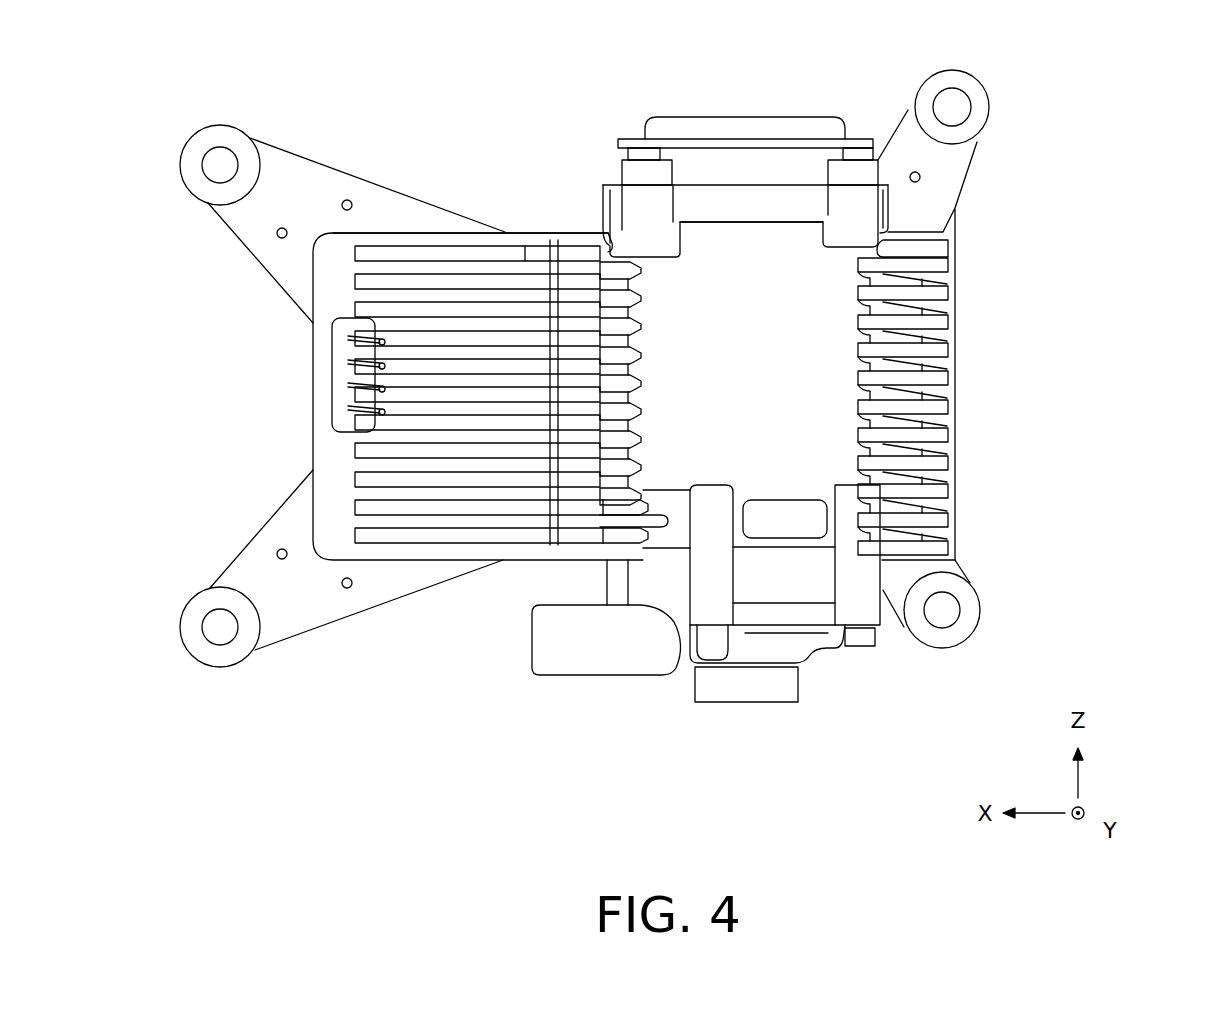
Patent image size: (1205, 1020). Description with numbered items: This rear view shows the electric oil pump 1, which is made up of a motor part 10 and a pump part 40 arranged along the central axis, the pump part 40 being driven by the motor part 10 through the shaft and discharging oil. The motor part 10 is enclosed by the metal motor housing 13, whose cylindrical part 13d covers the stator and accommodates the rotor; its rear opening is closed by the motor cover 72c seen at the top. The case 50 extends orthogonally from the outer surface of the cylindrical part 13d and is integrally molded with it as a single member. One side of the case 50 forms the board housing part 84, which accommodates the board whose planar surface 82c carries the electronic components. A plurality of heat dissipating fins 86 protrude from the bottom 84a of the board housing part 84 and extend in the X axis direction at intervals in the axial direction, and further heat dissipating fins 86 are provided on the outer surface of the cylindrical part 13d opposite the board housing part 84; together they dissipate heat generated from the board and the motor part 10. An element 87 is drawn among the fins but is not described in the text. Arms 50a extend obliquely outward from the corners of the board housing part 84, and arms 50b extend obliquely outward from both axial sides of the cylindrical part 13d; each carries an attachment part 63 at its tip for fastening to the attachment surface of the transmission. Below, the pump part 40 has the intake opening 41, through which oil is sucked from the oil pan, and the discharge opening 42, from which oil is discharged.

The electric oil pump 1 is at (1122, 128).
The motor part 10 is at (745, 137).
The motor housing 13 is at (695, 305).
The cylindrical part 13d is at (710, 275).
The pump part 40 is at (665, 637).
The intake opening 41 is at (532, 653).
The discharge opening 42 is at (760, 705).
The case 50 is at (330, 447).
The arm 50a is at (305, 170).
The arm 50b is at (945, 165).
The attachment part 63 is at (210, 128).
The motor cover 72c is at (745, 128).
The surface 82c is at (333, 360).
The board housing part 84 is at (508, 232).
The bottom 84a is at (527, 256).
The heat dissipating fins 86 is at (458, 265).
The fin support column 87 is at (570, 246).